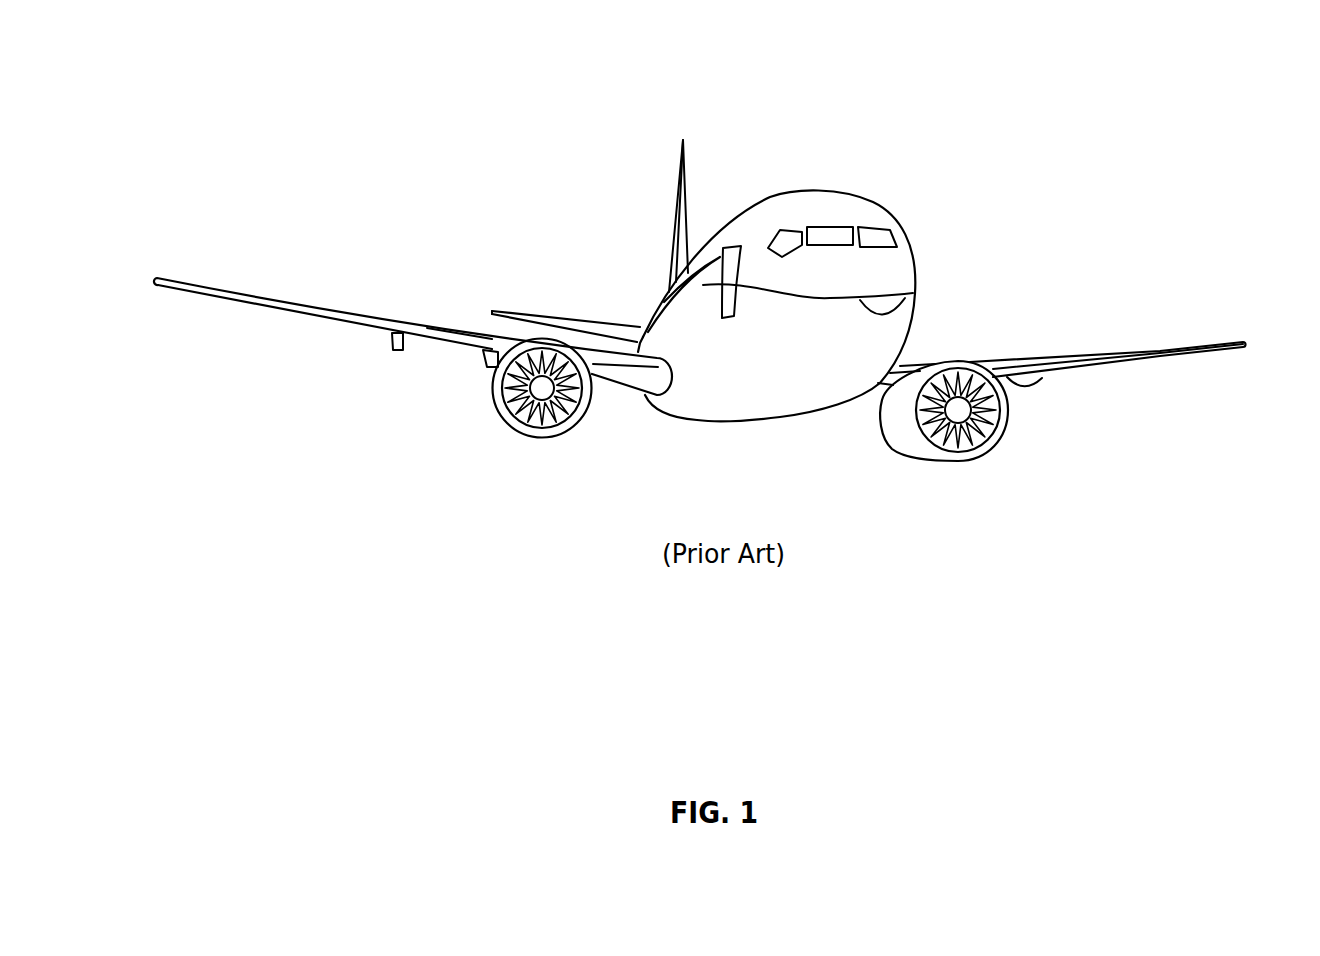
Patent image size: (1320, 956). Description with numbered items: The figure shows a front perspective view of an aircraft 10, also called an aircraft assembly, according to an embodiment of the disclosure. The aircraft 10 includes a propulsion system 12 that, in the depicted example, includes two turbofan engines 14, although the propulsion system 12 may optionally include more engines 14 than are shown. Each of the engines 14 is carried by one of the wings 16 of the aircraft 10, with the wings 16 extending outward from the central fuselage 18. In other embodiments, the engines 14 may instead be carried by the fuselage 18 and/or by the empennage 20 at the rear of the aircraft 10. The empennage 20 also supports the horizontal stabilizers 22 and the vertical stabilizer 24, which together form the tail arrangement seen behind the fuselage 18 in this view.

The aircraft 10 is at (426, 80).
The propulsion system 12 is at (1053, 452).
The turbofan engines 14 is at (537, 438).
The wings 16 is at (303, 305).
The fuselage 18 is at (917, 262).
The empennage 20 is at (668, 293).
The horizontal stabilizers 22 is at (532, 315).
The vertical stabilizer 24 is at (678, 180).